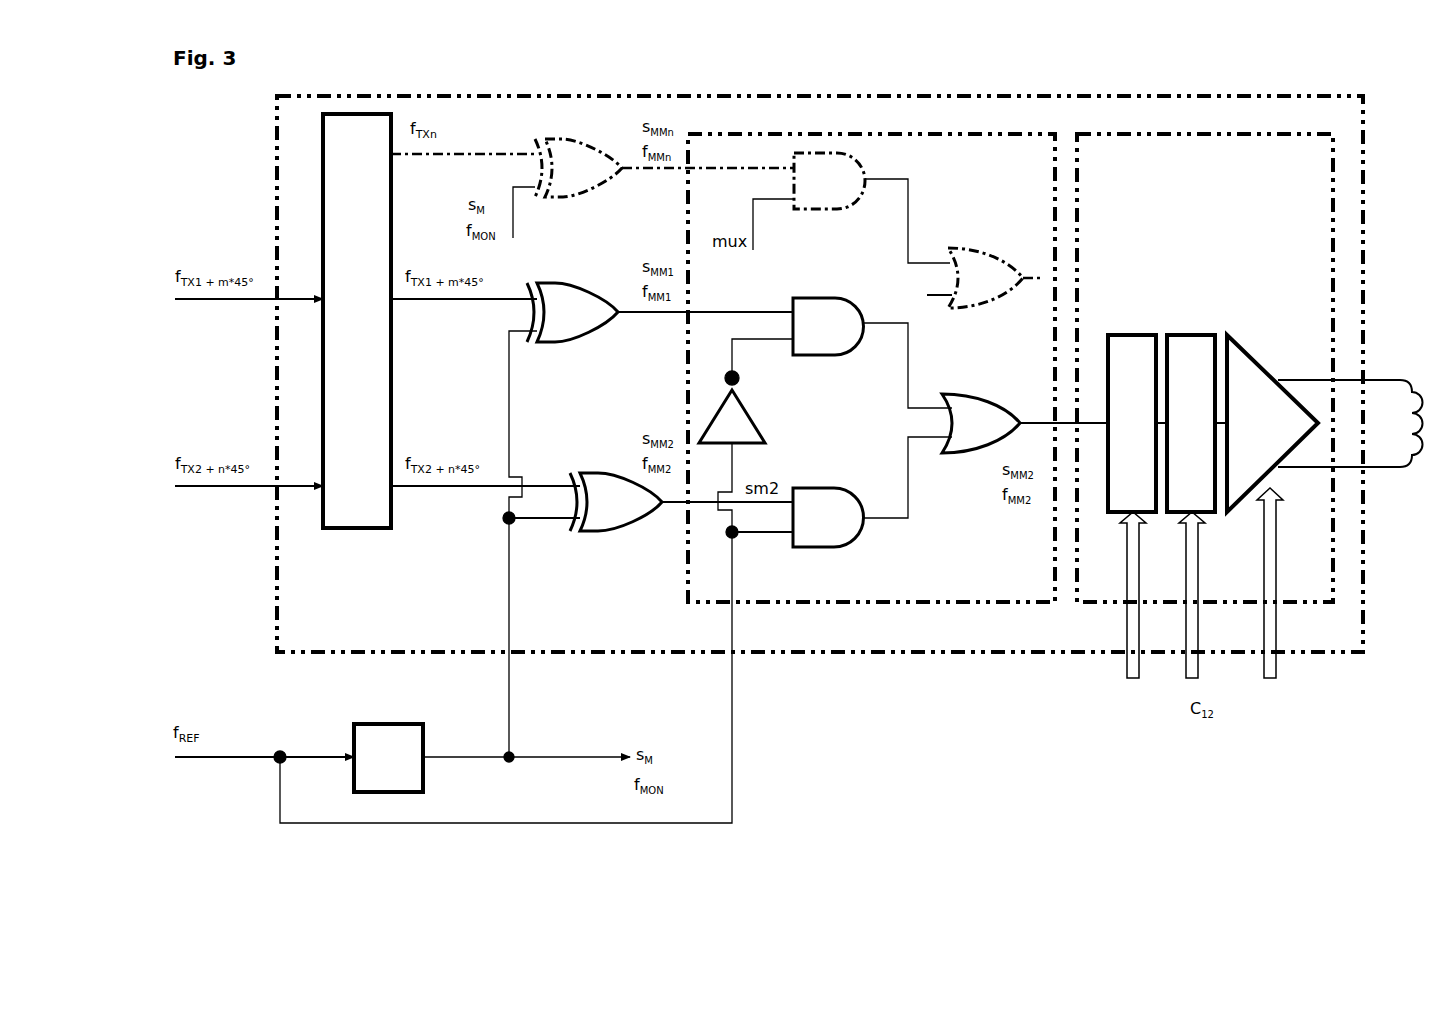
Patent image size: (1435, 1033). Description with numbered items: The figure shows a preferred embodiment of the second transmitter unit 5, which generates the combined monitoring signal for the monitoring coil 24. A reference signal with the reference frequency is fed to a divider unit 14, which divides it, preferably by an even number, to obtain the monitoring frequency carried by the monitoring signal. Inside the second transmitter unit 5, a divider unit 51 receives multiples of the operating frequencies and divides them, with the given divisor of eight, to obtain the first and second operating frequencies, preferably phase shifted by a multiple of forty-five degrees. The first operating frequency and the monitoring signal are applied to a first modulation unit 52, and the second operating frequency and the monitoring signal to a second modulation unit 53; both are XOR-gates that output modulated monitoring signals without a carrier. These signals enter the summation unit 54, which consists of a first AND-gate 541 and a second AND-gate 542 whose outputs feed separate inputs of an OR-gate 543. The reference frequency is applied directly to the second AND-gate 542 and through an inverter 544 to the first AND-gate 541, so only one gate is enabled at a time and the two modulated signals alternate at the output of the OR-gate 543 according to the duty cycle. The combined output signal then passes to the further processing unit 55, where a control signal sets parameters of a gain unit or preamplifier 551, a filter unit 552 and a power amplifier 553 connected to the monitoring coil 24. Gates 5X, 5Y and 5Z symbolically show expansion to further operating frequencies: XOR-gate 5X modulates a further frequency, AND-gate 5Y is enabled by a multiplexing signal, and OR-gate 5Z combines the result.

The second transmitter unit 5 is at (820, 374).
The divider unit 14 is at (388, 758).
The monitoring coil 24 is at (1350, 405).
The divider unit 51 is at (357, 321).
The first modulation unit 52 is at (572, 299).
The second modulation unit 53 is at (612, 519).
The summation unit 54 is at (871, 368).
The further processing unit 55 is at (1205, 368).
The first AND-gate 541 is at (850, 324).
The second AND-gate 542 is at (849, 520).
The OR-gate 543 is at (986, 414).
The inverter 544 is at (749, 391).
The gain unit or preamplifier 551 is at (1132, 494).
The filter unit 552 is at (1191, 494).
The power amplifier 553 is at (1272, 494).
The XOR-gate 5X is at (567, 188).
The AND-gate 5Y is at (809, 201).
The OR-gate 5Z is at (975, 263).